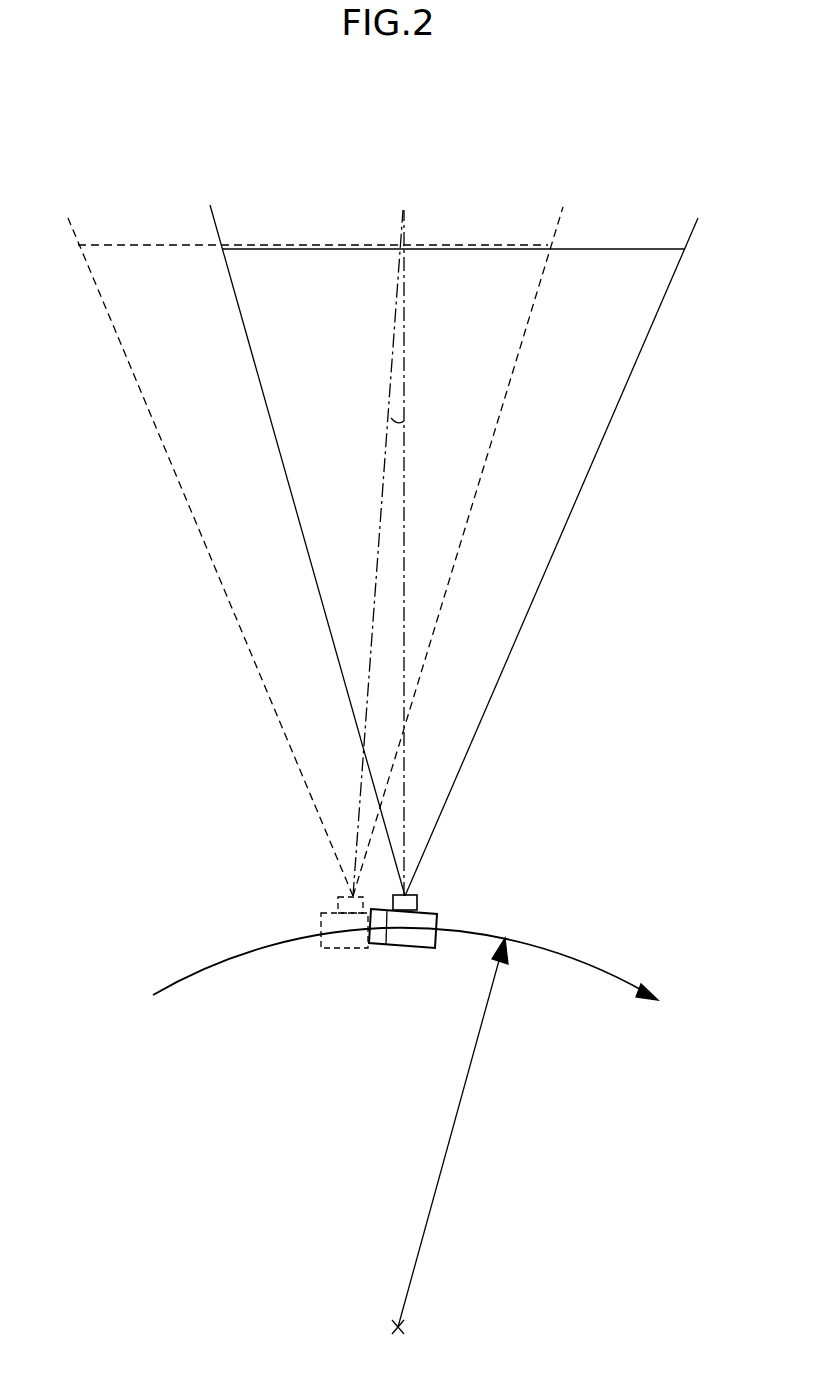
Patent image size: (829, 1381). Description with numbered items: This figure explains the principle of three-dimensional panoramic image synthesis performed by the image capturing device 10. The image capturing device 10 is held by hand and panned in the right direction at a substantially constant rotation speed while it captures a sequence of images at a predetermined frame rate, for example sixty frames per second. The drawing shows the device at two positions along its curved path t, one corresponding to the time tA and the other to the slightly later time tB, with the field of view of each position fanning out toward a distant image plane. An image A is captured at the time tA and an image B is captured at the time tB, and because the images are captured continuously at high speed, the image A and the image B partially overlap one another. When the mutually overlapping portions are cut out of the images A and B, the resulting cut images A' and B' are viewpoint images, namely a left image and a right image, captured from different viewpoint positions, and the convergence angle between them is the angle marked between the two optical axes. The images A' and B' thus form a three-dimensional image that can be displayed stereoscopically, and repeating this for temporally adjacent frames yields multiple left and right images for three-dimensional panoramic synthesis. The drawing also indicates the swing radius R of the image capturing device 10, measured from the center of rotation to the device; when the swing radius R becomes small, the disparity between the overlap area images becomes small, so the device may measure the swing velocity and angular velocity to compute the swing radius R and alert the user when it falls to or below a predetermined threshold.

The image capturing device 10 is at (437, 912).
The image A is at (315, 546).
The image A' is at (313, 195).
The image B is at (454, 533).
The image B' is at (454, 293).
The trajectory t is at (417, 977).
The time tA is at (343, 950).
The time tB is at (403, 950).
The swing radius R is at (450, 1136).